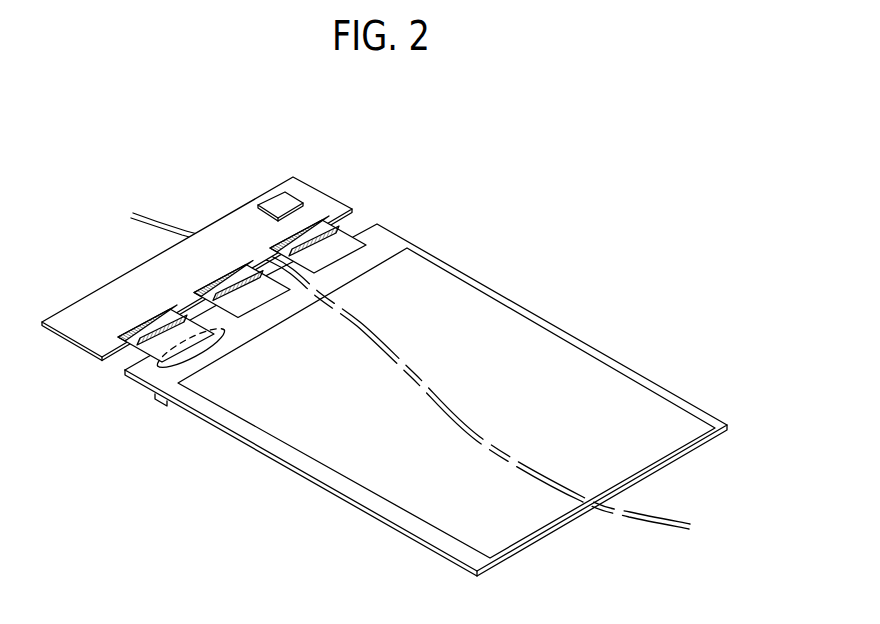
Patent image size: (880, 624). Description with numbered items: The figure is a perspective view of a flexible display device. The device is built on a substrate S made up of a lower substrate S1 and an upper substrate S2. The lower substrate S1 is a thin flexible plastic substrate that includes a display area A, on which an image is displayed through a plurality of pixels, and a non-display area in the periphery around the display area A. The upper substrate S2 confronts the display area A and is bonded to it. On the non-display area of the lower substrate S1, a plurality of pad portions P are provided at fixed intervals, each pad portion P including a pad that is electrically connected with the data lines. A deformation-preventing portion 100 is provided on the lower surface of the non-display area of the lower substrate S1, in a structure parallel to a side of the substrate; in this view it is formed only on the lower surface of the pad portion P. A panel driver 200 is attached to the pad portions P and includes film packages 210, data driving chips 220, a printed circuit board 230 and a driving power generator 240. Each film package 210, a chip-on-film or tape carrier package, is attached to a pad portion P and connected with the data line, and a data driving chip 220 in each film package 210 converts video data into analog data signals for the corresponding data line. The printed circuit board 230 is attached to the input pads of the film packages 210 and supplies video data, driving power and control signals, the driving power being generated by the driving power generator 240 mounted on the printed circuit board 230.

The deformation-preventing portion 100 is at (152, 400).
The panel driver 200 is at (228, 230).
The film package 210 is at (318, 221).
The data driving chip 220 is at (332, 226).
The printed circuit board 230 is at (310, 187).
The driving power generator 240 is at (282, 205).
The display area A is at (375, 428).
The pad portion P is at (143, 372).
The substrate S is at (602, 509).
The lower substrate S1 is at (512, 556).
The upper substrate S2 is at (547, 528).